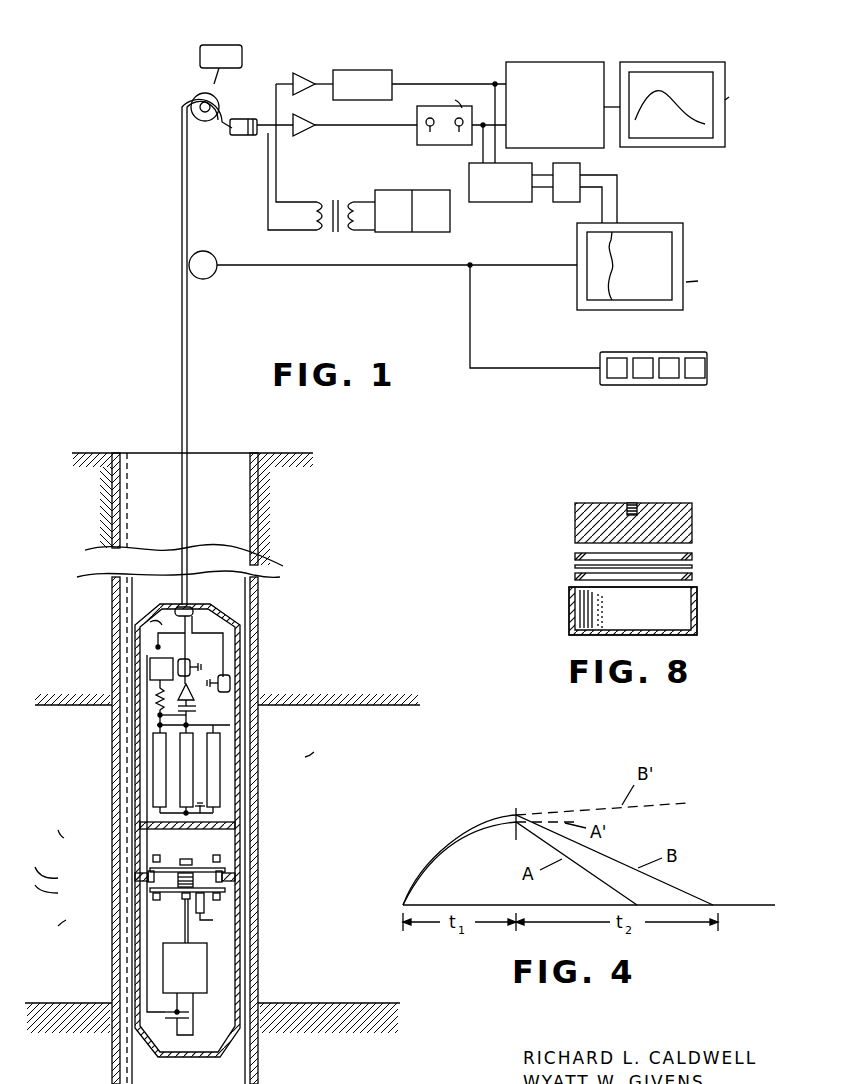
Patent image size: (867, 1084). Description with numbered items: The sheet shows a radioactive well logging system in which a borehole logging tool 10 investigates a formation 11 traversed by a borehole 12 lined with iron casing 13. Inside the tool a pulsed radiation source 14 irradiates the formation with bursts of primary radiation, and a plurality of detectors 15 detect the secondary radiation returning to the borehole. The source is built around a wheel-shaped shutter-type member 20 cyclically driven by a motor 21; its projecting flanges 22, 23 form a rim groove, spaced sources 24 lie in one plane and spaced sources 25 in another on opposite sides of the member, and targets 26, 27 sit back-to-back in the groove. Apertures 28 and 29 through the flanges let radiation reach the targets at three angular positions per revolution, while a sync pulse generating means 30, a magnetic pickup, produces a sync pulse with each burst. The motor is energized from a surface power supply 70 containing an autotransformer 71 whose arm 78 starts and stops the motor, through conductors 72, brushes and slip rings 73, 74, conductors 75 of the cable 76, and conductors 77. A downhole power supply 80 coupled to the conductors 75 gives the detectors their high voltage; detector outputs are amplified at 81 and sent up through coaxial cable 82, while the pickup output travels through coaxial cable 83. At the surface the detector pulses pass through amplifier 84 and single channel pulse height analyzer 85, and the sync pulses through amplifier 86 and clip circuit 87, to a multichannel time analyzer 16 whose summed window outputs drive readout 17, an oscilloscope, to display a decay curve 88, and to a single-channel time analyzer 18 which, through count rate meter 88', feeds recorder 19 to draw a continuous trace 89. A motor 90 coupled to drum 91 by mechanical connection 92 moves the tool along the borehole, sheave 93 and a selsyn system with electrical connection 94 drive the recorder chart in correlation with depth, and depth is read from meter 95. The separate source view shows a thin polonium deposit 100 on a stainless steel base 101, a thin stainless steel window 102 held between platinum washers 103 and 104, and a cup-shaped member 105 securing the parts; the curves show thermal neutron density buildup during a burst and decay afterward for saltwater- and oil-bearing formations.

In FIG. 1, the borehole logging tool 10 is at (225, 612).
In FIG. 1, the formation 11 is at (300, 818).
In FIG. 1, the borehole 12 is at (205, 462).
In FIG. 1, the iron casing 13 is at (252, 502).
In FIG. 1, the pulsed radiation source 14 is at (177, 939).
In FIG. 1, the detectors 15 is at (213, 777).
In FIG. 1, the multichannel time analyzer 16 is at (545, 62).
In FIG. 1, the readout 17 is at (695, 62).
In FIG. 1, the single-channel time analyzer 18 is at (510, 203).
In FIG. 1, the recorder 19 is at (685, 253).
In FIG. 1, the shutter-type control member 20 is at (204, 883).
In FIG. 1, the motor 21 is at (203, 995).
In FIG. 1, the projecting flange 22 is at (225, 869).
In FIG. 1, the projecting flange 23 is at (222, 891).
In FIG. 1, the spaced sources 24 is at (153, 857).
In FIG. 1, the spaced sources 25 is at (153, 897).
In FIG. 1, the target 26 is at (147, 874).
In FIG. 1, the target 27 is at (148, 882).
In FIG. 1, the aperture 28 is at (182, 860).
In FIG. 1, the aperture 29 is at (184, 889).
In FIG. 1, the sync pulse generating means 30 is at (266, 954).
In FIG. 1, the power supply 70 is at (450, 232).
In FIG. 1, the autotransformer 71 is at (358, 232).
In FIG. 1, the conductors 72 is at (276, 185).
In FIG. 1, the brushes and slip rings 73 is at (213, 133).
In FIG. 1, the brushes and slip rings 74 is at (213, 101).
In FIG. 1, the conductors of cable 75 is at (165, 633).
In FIG. 1, the cable 76 is at (180, 410).
In FIG. 1, the conductors 77 is at (158, 647).
In FIG. 1, the arm of autotransformer 78 is at (356, 203).
In FIG. 1, the power supply 80 is at (150, 668).
In FIG. 1, the amplifier 81 is at (196, 690).
In FIG. 1, the coaxial cable 82 is at (191, 663).
In FIG. 1, the coaxial cable 83 is at (230, 683).
In FIG. 1, the amplifier 84 is at (308, 131).
In FIG. 1, the single channel pulse height analyzer 85 is at (415, 140).
In FIG. 1, the amplifier 86 is at (305, 72).
In FIG. 1, the clip circuit 87 is at (385, 69).
In FIG. 1, the decay curve 88 is at (670, 100).
In FIG. 1, the count rate meter 88' is at (659, 190).
In FIG. 1, the continuous trace 89 is at (623, 262).
In FIG. 1, the motor 90 is at (200, 50).
In FIG. 1, the drum 91 is at (190, 96).
In FIG. 1, the mechanical connection 92 is at (209, 80).
In FIG. 1, the sheave 93 is at (207, 279).
In FIG. 1, the electrical connection 94 is at (300, 268).
In FIG. 1, the meter 95 is at (680, 352).
In FIG. 8, the polonium deposit 100 is at (580, 546).
In FIG. 8, the stainless steel base 101 is at (575, 513).
In FIG. 8, the stainless steel window 102 is at (660, 566).
In FIG. 8, the platinum washer 103 is at (692, 555).
In FIG. 8, the platinum washer 104 is at (575, 578).
In FIG. 8, the cup-shaped member 105 is at (697, 620).